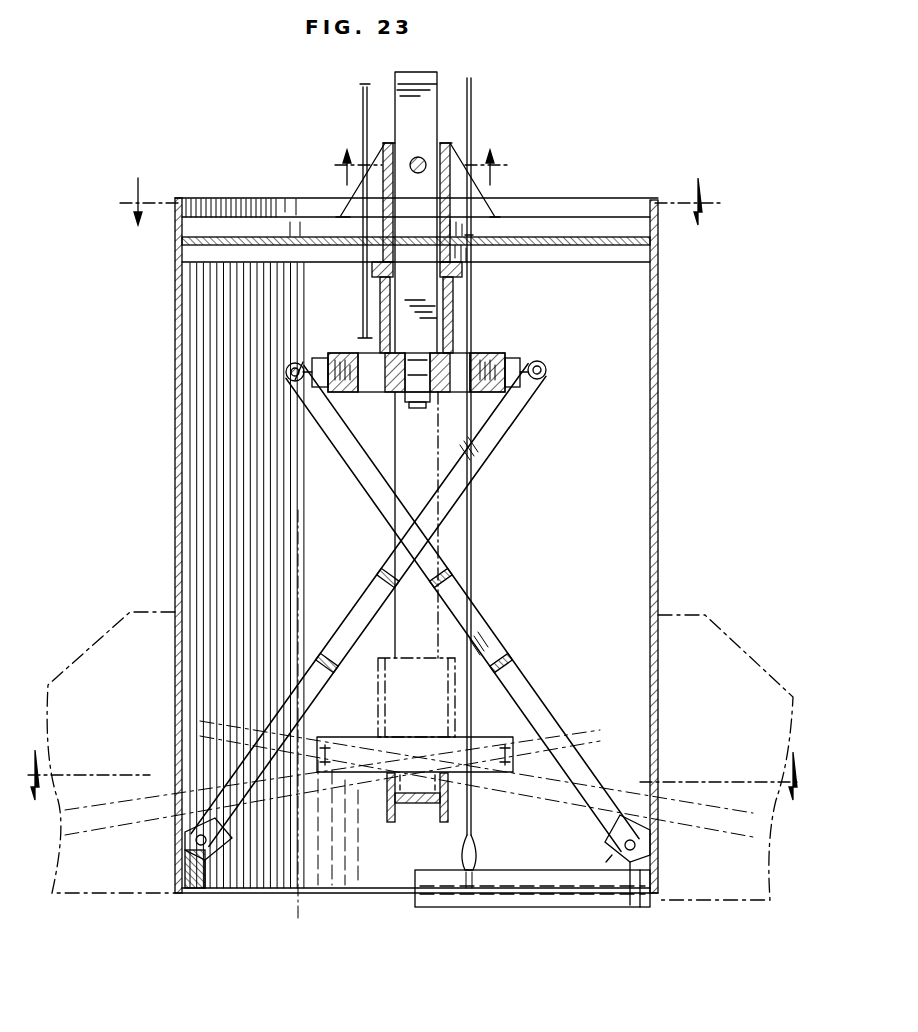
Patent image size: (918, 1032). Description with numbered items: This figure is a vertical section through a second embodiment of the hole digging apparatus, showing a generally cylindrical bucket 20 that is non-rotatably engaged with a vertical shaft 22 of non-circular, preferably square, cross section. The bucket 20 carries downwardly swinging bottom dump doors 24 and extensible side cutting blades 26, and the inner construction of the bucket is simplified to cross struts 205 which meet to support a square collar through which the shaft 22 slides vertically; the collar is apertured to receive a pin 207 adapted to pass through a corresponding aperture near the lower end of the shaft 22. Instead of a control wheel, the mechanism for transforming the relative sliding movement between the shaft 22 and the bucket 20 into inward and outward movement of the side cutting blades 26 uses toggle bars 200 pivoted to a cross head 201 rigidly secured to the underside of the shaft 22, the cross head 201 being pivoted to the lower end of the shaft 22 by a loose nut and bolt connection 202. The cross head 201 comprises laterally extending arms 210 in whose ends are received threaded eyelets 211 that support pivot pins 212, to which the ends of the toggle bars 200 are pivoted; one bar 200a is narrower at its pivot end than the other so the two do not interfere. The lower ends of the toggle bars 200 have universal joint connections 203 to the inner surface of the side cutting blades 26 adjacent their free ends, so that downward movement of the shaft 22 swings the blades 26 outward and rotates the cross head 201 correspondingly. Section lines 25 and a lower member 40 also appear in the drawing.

The bucket 20 is at (656, 545).
The vertical shaft 22 is at (432, 102).
The bottom dump doors 24 is at (356, 906).
The section line 25 is at (407, 756).
The side cutting blades 26 is at (742, 910).
The lower pull rod and beam 40 is at (476, 855).
The toggle bars 200 is at (524, 684).
The narrower toggle bar 200a is at (348, 635).
The cross head 201 is at (475, 355).
The loose nut and bolt connection 202 is at (424, 405).
The universal joint connections 203 is at (208, 865).
The cross struts 205 is at (548, 237).
The pin 207 is at (414, 158).
The laterally extending arms 210 is at (355, 354).
The threaded eyelets 211 is at (520, 362).
The pivot pins 212 is at (547, 370).